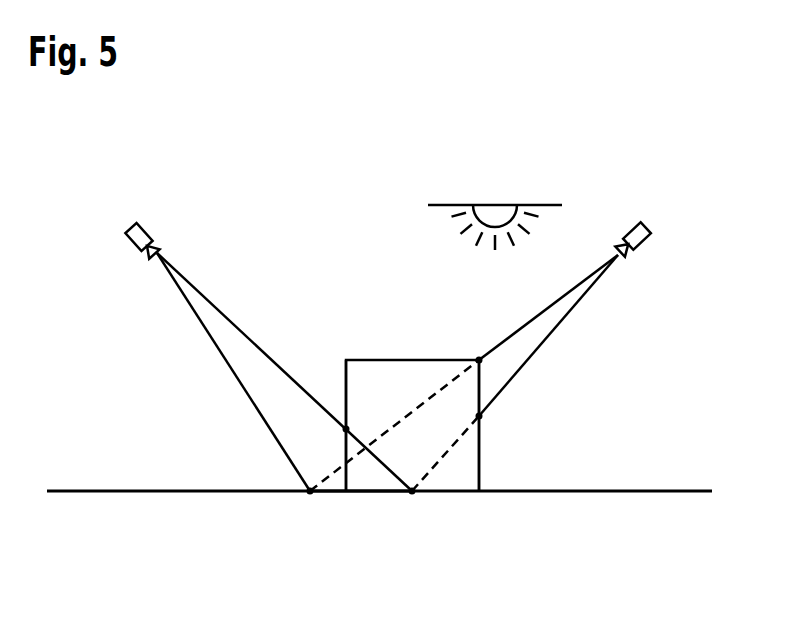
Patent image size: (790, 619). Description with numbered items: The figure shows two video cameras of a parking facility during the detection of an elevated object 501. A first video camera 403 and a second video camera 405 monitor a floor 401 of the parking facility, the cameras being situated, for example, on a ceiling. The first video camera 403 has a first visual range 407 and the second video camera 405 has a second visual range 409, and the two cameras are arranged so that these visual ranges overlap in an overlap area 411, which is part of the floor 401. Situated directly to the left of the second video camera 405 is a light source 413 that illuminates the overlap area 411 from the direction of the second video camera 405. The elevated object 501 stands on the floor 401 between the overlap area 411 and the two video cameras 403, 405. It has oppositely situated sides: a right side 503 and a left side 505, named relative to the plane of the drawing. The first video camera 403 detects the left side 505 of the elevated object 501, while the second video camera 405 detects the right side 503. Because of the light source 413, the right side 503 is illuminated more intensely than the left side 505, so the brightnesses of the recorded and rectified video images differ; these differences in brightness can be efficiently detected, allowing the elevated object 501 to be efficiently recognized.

The floor 401 is at (610, 477).
The first video camera 403 is at (130, 222).
The second video camera 405 is at (644, 221).
The first visual range 407 is at (265, 400).
The second visual range 409 is at (535, 337).
The overlap area 411 is at (413, 491).
The light source 413 is at (495, 204).
The elevated object 501 is at (375, 358).
The right side 503 is at (483, 441).
The left side 505 is at (343, 375).